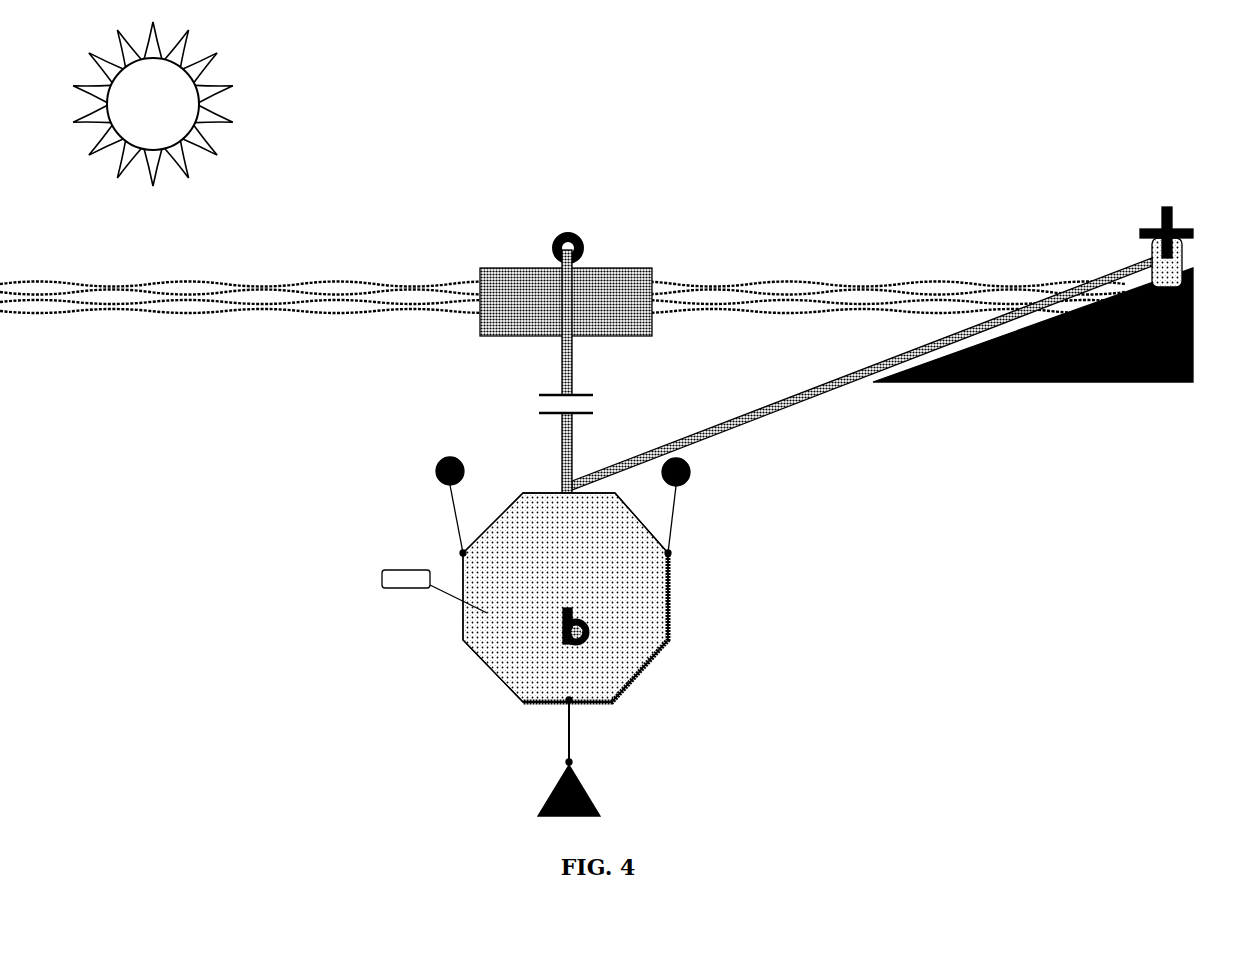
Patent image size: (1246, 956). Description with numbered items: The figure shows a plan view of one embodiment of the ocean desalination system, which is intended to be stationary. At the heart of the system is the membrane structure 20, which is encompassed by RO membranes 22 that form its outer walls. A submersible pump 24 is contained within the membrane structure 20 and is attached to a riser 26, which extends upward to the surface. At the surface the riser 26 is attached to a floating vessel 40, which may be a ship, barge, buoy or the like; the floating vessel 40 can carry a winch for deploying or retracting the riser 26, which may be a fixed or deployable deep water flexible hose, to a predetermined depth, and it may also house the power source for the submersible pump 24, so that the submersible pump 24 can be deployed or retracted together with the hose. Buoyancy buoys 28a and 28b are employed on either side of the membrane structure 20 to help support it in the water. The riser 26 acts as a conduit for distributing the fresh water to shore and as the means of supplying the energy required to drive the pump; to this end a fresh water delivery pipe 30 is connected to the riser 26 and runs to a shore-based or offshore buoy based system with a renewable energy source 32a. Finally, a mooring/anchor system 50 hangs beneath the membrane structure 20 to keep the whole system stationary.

The membrane structure 20 is at (737, 567).
The RO membranes 22 is at (670, 577).
The submersible pump 24 is at (670, 620).
The riser 26 is at (562, 466).
The buoyancy buoy 28a is at (419, 481).
The buoyancy buoy 28b is at (690, 470).
The fresh water delivery pipe 30 is at (660, 450).
The renewable energy source 32a is at (1158, 228).
The floating vessel 40 is at (652, 268).
The mooring/anchor system 50 is at (592, 793).